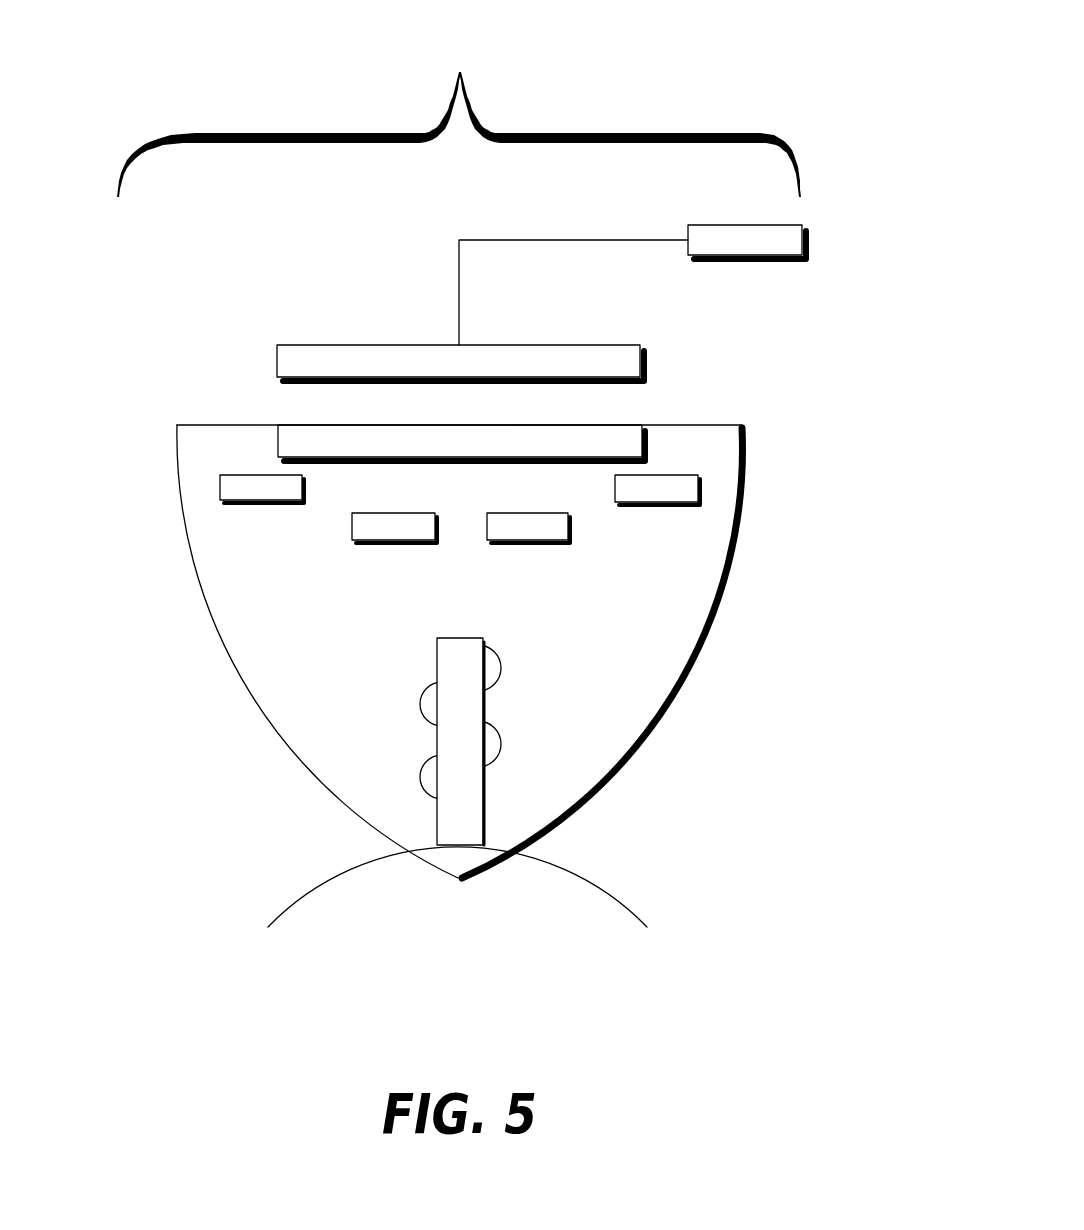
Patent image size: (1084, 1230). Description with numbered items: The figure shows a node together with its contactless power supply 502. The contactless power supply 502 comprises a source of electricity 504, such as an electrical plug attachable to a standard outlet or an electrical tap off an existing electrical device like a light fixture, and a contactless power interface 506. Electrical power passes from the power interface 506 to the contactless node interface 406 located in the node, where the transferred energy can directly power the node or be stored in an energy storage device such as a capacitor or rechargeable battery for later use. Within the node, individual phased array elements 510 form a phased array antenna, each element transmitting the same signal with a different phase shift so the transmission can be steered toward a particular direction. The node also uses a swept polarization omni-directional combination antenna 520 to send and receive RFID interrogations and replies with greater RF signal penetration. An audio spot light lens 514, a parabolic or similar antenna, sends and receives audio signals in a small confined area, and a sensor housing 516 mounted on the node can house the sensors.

The contactless power supply 502 is at (459, 110).
The source of electricity 504 is at (808, 243).
The contactless power interface 506 is at (277, 360).
The contactless node interface 406 is at (277, 443).
The phased array elements 510 is at (700, 487).
The swept polarization omni-directional combination (SPOCK) antenna 520 is at (497, 667).
The audio spot light lens 514 is at (325, 882).
The sensor housing 516 is at (458, 880).